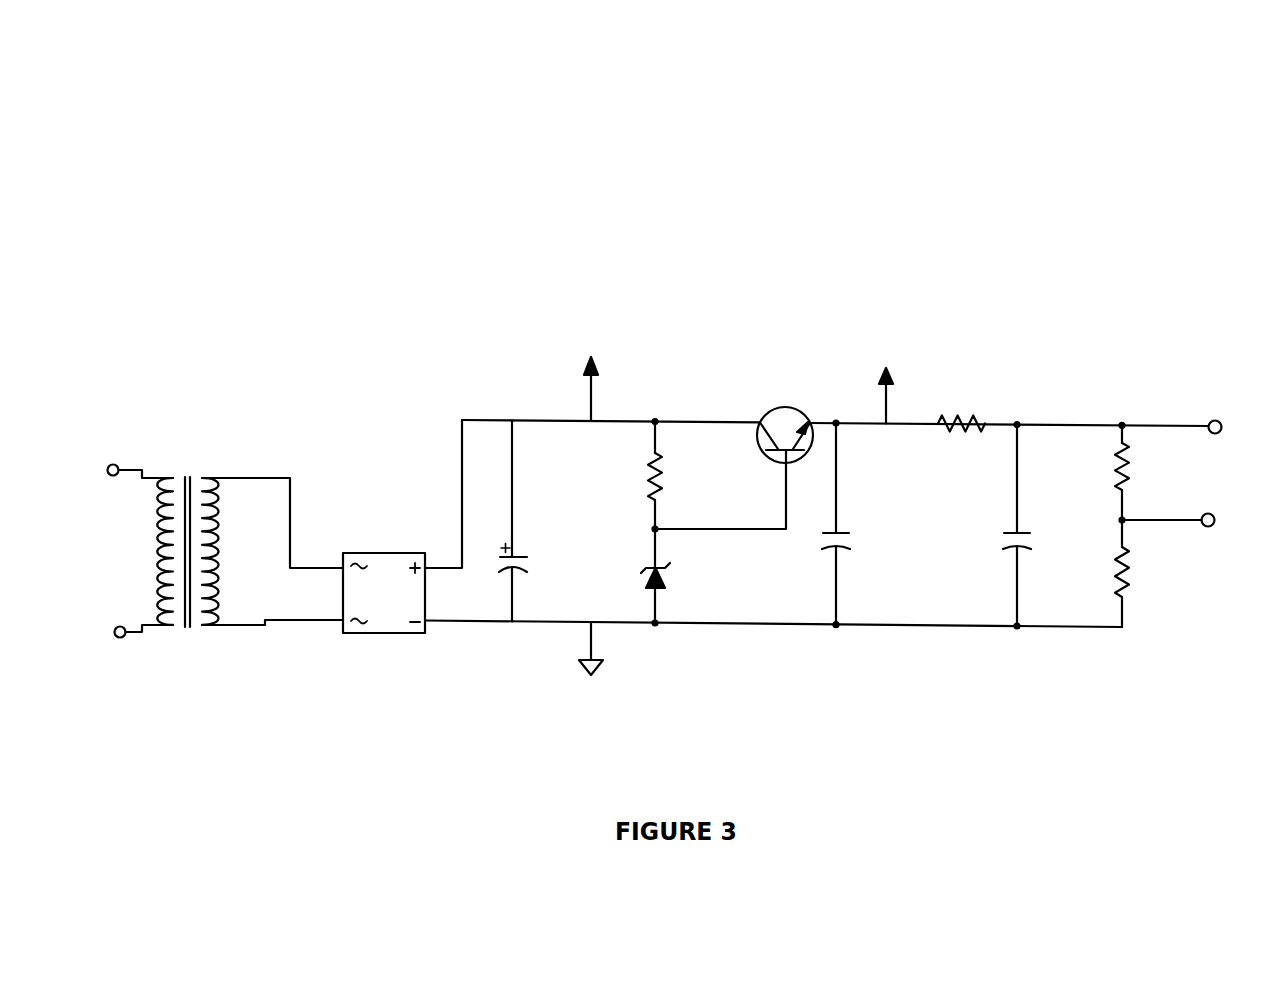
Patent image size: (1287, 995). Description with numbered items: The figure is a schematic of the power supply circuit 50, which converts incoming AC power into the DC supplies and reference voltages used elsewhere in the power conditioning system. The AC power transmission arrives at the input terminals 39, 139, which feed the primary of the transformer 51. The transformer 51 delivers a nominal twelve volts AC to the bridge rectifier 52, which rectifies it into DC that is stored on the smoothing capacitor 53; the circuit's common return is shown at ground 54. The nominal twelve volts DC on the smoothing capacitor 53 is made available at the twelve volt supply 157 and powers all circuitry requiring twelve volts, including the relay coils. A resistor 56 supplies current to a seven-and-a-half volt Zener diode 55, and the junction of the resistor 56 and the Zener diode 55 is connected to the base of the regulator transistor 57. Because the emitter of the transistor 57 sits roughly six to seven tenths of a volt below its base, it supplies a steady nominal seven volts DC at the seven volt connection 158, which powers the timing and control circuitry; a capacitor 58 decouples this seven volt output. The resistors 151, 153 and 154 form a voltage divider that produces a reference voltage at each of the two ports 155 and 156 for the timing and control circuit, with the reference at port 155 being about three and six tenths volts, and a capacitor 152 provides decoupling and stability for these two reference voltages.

The power supply circuit 50 is at (1138, 143).
The input terminal 39 is at (108, 466).
The input terminal 139 is at (118, 639).
The transformer 51 is at (200, 475).
The bridge rectifier 52 is at (368, 637).
The smoothing capacitor 53 is at (518, 556).
The ground 54 is at (598, 675).
The Zener diode 55 is at (666, 567).
The resistor 56 is at (664, 466).
The regulator transistor 57 is at (786, 407).
The capacitor 58 is at (840, 530).
The resistor 151 is at (975, 418).
The capacitor 152 is at (1025, 530).
The resistor 153 is at (1128, 468).
The resistor 154 is at (1127, 597).
The port 155 is at (1215, 419).
The port 156 is at (1213, 527).
The +12 volt supply 157 is at (597, 366).
The +7V connection 158 is at (890, 377).